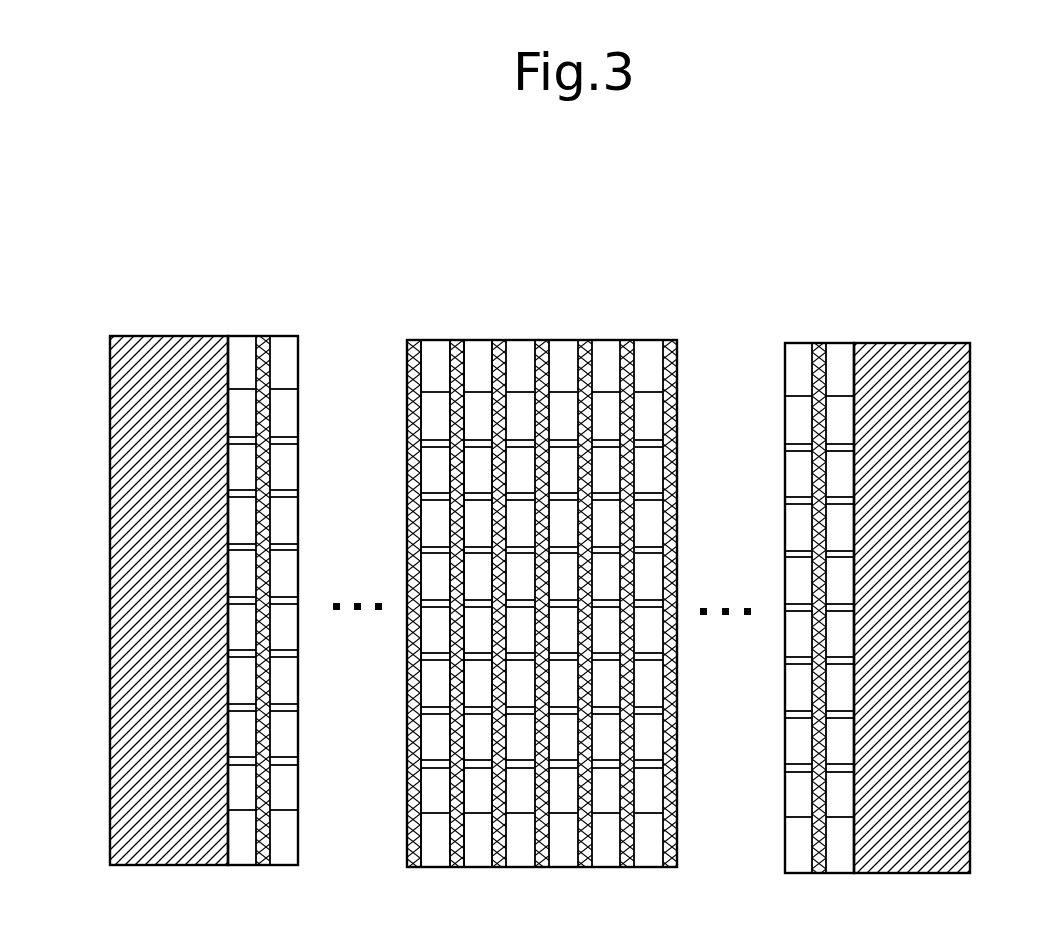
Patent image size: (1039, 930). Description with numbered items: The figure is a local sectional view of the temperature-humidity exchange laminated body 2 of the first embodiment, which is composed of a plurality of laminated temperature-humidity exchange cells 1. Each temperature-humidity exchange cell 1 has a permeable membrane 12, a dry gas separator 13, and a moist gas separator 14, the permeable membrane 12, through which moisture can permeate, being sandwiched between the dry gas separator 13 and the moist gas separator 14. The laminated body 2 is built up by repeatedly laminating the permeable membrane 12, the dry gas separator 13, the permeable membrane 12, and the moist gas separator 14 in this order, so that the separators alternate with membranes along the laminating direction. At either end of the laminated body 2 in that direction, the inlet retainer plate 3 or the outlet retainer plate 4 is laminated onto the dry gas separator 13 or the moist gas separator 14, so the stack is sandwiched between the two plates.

The temperature-humidity exchange cell 1 is at (643, 270).
The temperature-humidity exchange laminated body 2 is at (546, 208).
The inlet retainer plate 3 is at (165, 336).
The outlet retainer plate 4 is at (892, 343).
The permeable membrane 12 is at (413, 340).
The dry gas separator 13 is at (436, 340).
The moist gas separator 14 is at (478, 340).